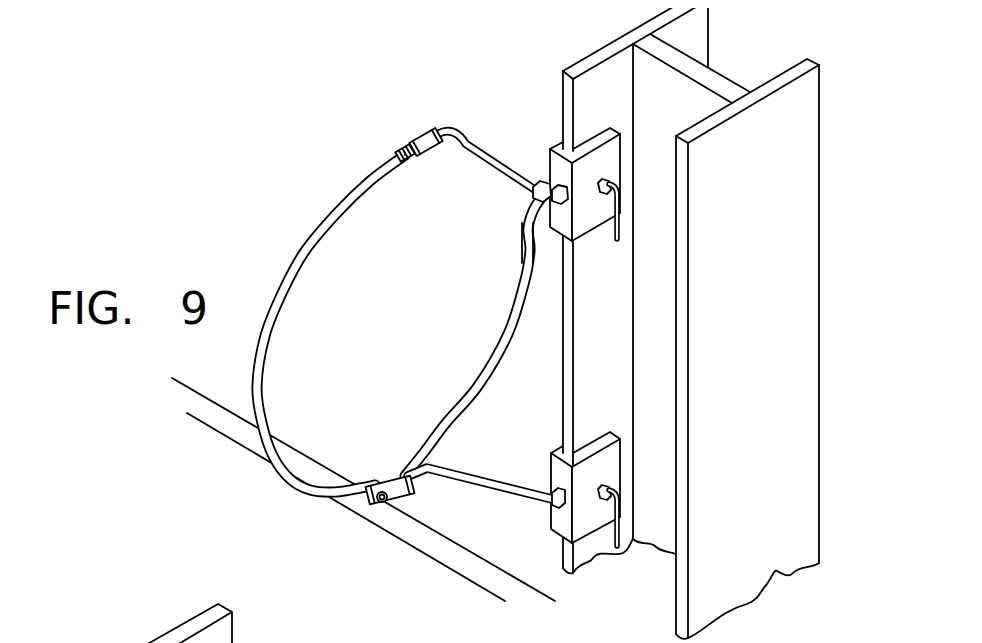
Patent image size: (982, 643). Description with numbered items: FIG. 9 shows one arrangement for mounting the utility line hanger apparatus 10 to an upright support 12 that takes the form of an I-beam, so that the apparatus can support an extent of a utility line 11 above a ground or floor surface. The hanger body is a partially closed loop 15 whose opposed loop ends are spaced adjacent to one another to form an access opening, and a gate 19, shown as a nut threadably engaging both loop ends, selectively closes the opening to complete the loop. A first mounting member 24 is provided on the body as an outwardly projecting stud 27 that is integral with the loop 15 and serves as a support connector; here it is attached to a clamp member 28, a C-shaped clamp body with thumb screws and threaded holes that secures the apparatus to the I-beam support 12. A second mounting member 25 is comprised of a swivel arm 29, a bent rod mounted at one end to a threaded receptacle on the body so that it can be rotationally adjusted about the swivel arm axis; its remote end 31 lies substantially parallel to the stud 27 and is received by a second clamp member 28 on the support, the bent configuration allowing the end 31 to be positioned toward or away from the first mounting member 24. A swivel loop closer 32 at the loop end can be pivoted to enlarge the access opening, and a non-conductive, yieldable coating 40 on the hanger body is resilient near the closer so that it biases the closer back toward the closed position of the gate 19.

The utility line hanger apparatus 10 is at (300, 187).
The utility line 11 is at (480, 548).
The upright support 12 is at (795, 138).
The loop 15 is at (498, 337).
The gate 19 is at (410, 133).
The first mounting member 24 is at (543, 220).
The second mounting member 25 is at (463, 463).
The stud 27 is at (547, 177).
The clamp member 28 is at (598, 157).
The swivel arm 29 is at (505, 475).
The remote end 31 is at (557, 512).
The swivel loop closer 32 is at (468, 180).
The coating 40 is at (330, 494).